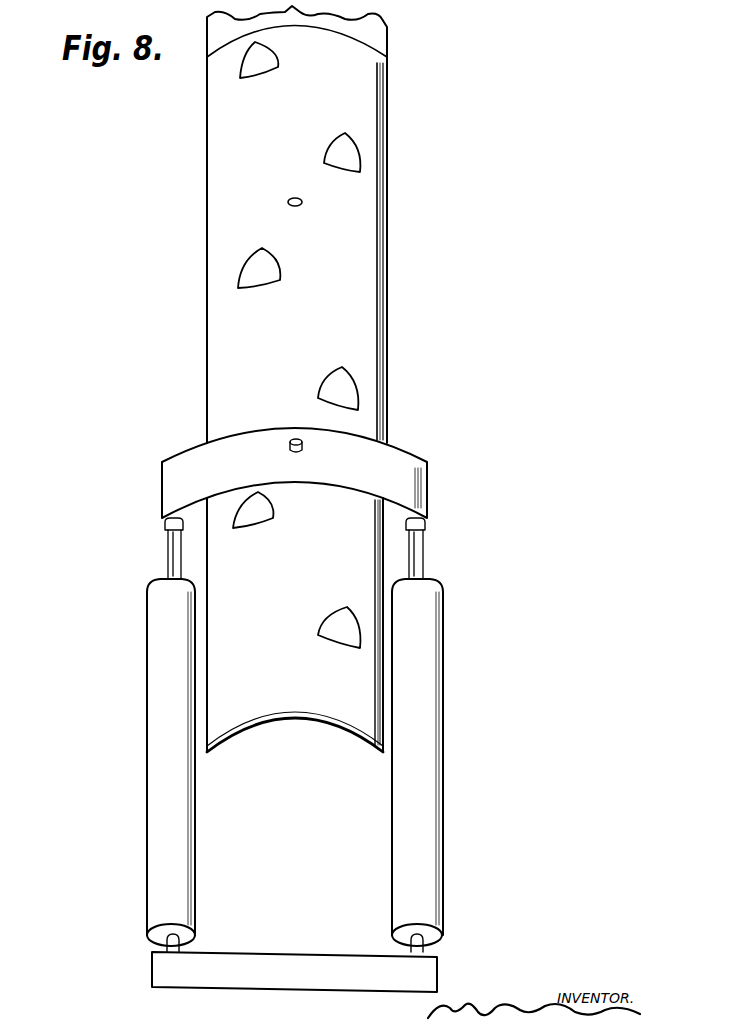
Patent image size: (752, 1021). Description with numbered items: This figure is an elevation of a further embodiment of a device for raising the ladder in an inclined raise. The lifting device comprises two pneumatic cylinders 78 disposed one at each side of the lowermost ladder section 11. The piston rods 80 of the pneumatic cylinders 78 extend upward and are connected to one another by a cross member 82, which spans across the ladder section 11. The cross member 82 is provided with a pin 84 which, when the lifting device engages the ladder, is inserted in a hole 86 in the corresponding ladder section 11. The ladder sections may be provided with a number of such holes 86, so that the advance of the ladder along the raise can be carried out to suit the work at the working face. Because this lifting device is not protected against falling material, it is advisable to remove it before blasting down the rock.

The lowermost ladder section 11 is at (223, 369).
The pneumatic cylinders 78 is at (165, 715).
The piston rods 80 is at (170, 543).
The cross member 82 is at (410, 487).
The pin 84 is at (304, 448).
The hole 86 is at (302, 202).